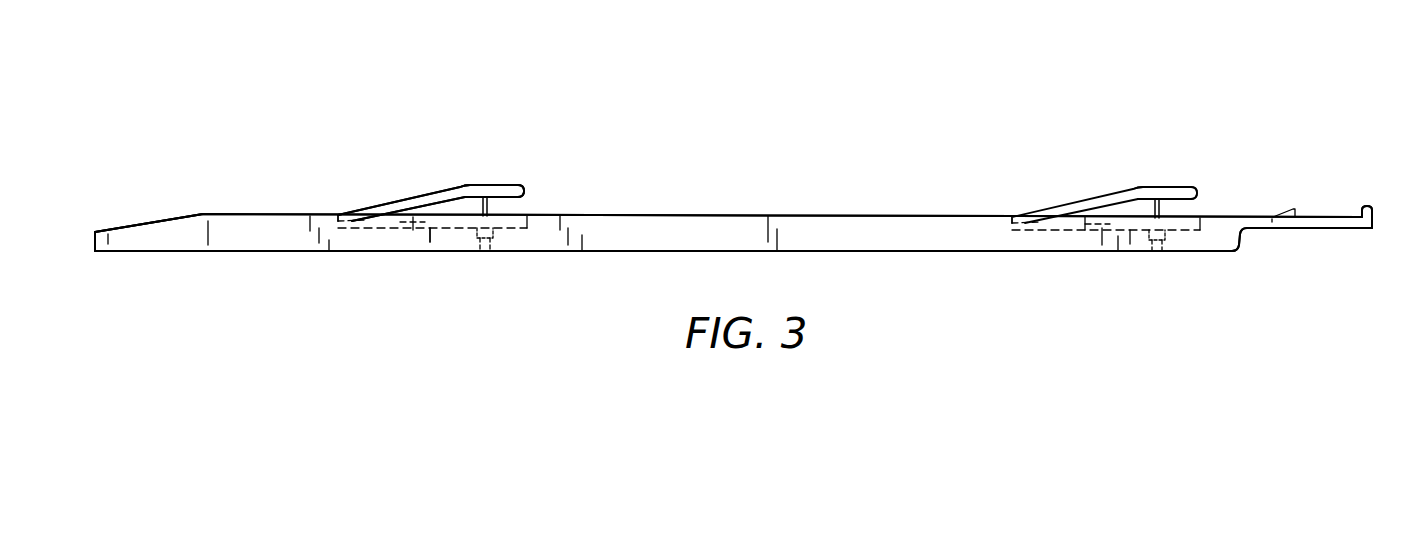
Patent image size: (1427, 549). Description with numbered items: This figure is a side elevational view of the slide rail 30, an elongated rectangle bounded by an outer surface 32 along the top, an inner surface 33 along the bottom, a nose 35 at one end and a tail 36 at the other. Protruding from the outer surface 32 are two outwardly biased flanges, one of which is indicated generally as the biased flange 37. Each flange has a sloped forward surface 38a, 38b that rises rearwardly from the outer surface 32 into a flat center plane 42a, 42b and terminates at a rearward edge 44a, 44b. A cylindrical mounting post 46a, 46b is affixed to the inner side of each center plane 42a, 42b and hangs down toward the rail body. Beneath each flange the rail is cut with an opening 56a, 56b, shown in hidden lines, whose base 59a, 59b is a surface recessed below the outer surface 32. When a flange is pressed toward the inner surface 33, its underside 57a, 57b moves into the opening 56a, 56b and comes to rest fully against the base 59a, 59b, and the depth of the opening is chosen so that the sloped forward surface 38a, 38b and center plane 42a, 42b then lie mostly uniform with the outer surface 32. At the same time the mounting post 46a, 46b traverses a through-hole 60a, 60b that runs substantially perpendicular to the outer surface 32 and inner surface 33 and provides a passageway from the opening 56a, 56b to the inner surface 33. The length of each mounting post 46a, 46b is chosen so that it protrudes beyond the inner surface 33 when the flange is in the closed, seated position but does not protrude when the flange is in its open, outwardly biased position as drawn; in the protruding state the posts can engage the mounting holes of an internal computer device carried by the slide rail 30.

The slide rail 30 is at (768, 72).
The outer surface 32 is at (857, 216).
The inner surface 33 is at (890, 252).
The nose 35 is at (143, 190).
The tail 36 is at (1340, 282).
The biased flange 37 is at (483, 123).
The sloped forward surface 38a is at (378, 200).
The sloped forward surface 38b is at (1048, 197).
The center plane 42a is at (472, 185).
The center plane 42b is at (1151, 187).
The rearward edge 44a is at (510, 187).
The rearward edge 44b is at (1188, 187).
The cylindrical mounting post 46a is at (540, 197).
The cylindrical mounting post 46b is at (1212, 199).
The opening 56a is at (527, 220).
The opening 56b is at (1205, 222).
The underside 57a is at (412, 225).
The underside 57b is at (1110, 230).
The base 59a is at (432, 235).
The base 59b is at (1130, 236).
The through-hole 60a is at (485, 243).
The through-hole 60b is at (1157, 250).